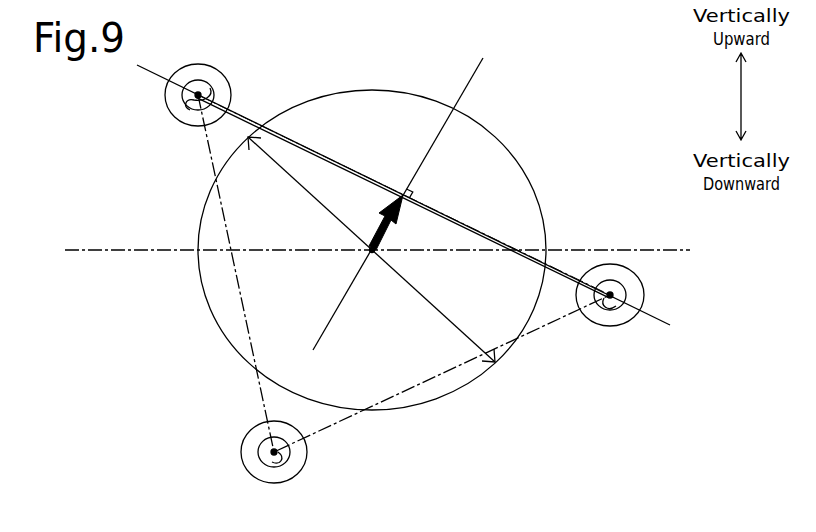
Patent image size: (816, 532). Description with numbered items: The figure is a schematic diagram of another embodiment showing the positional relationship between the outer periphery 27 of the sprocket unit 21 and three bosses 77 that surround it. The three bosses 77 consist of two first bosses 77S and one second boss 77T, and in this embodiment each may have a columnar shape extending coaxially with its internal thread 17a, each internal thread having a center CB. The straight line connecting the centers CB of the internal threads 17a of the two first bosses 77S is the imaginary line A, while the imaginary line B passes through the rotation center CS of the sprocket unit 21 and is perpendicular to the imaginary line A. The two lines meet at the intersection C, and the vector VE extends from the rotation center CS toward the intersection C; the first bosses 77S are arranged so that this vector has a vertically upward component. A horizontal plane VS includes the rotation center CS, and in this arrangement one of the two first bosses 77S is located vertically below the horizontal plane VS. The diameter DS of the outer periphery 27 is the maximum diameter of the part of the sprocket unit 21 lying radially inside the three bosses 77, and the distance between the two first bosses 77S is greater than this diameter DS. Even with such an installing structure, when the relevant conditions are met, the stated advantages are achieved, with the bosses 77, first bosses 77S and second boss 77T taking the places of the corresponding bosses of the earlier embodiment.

The first boss 77S is at (196, 64).
The second boss 77T is at (307, 451).
The boss 77 is at (458, 252).
The internal thread 17a is at (186, 104).
The center of internal thread CB is at (214, 93).
The outer periphery 27 is at (375, 90).
The sprocket unit 21 is at (372, 228).
The horizontal plane VS is at (84, 250).
The intersection C is at (403, 192).
The imaginary line B is at (432, 148).
The imaginary line A is at (462, 221).
The vector arrow VE is at (393, 233).
The rotation center CS is at (373, 253).
The diameter DS is at (437, 308).